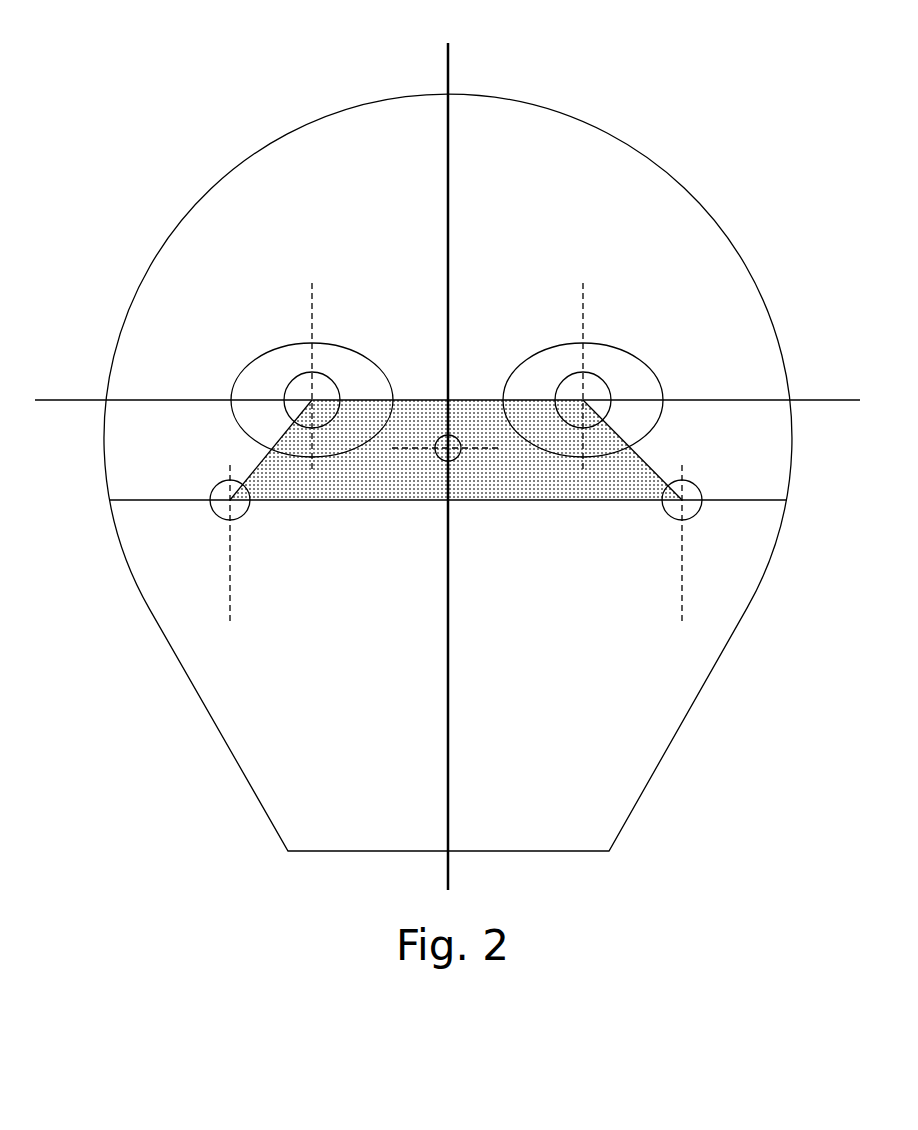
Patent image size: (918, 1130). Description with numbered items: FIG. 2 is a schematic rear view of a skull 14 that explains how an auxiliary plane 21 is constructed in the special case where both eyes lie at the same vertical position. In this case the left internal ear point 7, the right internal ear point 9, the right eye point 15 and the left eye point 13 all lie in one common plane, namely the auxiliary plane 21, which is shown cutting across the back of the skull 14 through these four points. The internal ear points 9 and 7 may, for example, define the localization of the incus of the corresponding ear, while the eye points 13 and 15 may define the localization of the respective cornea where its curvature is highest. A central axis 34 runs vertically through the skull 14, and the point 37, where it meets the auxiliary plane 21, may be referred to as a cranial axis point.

The skull 14 is at (667, 165).
The central axis 34 is at (452, 72).
The auxiliary plane 21 is at (404, 428).
The left eye point 13 is at (304, 397).
The right eye point 15 is at (586, 400).
The left internal ear point 7 is at (251, 505).
The right internal ear point 9 is at (661, 506).
The cranial axis point 37 is at (446, 452).